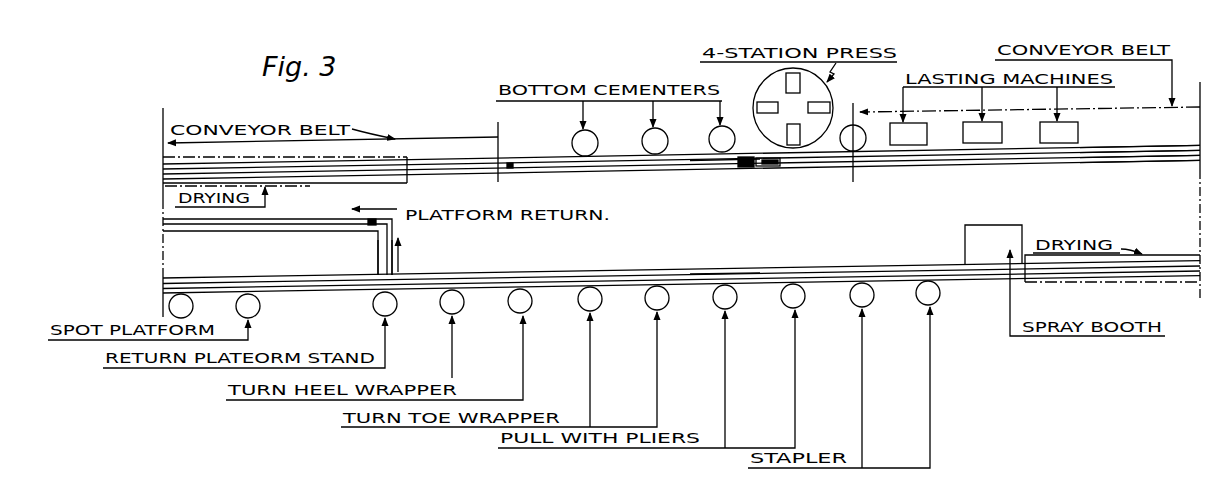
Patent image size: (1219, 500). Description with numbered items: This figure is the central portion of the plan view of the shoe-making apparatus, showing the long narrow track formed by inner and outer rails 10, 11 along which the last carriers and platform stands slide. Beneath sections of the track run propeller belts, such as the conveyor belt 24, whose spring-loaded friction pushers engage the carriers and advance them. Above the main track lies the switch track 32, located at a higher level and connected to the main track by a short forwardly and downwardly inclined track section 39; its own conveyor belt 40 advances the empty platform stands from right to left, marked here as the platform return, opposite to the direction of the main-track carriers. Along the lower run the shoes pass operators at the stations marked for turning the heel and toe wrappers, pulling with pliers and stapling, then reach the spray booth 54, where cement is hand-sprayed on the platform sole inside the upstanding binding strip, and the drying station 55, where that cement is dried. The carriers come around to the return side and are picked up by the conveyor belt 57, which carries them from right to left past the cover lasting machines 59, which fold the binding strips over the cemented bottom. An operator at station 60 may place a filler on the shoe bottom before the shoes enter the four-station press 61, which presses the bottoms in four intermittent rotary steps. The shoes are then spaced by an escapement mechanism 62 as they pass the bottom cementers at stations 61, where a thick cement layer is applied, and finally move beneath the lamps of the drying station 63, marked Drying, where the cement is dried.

The inner rail 10 is at (548, 159).
The outer rail 11 is at (718, 170).
The conveyor belt 24 is at (480, 166).
The switch track 32 is at (172, 242).
The inclined track section 39 is at (385, 258).
The conveyor belt 40 is at (316, 222).
The spray booth 54 is at (997, 231).
The drying station 55 is at (1163, 255).
The conveyor belt 57 is at (1140, 152).
The cover lasting machine 59 is at (984, 133).
The filler station 60 is at (848, 142).
The 4-station press / bottom cementer station 61 is at (595, 136).
The escapement mechanism 62 is at (744, 168).
The drying station 63 is at (175, 160).